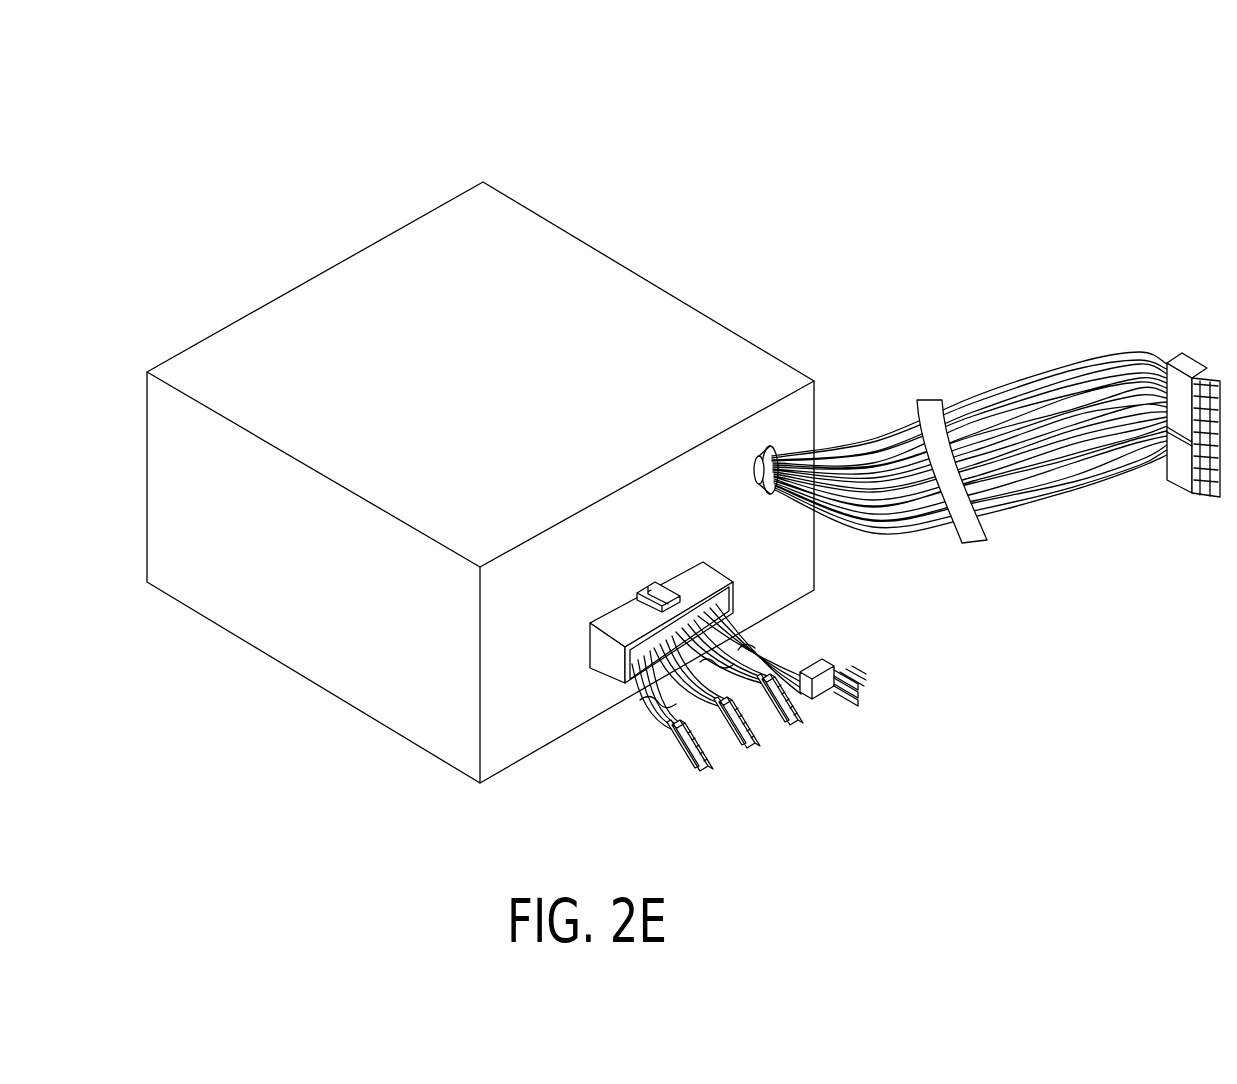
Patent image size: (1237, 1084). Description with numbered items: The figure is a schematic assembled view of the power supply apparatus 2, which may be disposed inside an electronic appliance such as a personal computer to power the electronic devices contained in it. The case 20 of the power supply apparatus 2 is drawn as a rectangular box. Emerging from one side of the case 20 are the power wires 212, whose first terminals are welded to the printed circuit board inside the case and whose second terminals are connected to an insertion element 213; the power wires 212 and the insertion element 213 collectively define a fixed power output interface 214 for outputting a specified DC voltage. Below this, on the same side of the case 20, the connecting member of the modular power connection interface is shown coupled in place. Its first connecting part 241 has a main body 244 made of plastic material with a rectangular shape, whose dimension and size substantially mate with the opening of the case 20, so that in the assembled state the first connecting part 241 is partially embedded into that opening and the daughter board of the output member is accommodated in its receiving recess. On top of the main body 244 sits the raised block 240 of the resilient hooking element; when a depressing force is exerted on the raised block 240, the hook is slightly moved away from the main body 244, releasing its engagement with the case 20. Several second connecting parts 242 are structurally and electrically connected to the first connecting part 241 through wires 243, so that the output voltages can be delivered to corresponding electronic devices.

The power supply apparatus 2 is at (1222, 103).
The case 20 is at (662, 315).
The power wires 212 is at (1073, 370).
The insertion element 213 is at (1193, 381).
The fixed power output interface 214 is at (996, 376).
The raised block 240 is at (744, 682).
The first connecting part 241 is at (719, 682).
The second connecting parts 242 is at (767, 737).
The wires 243 is at (655, 722).
The main body 244 is at (610, 655).